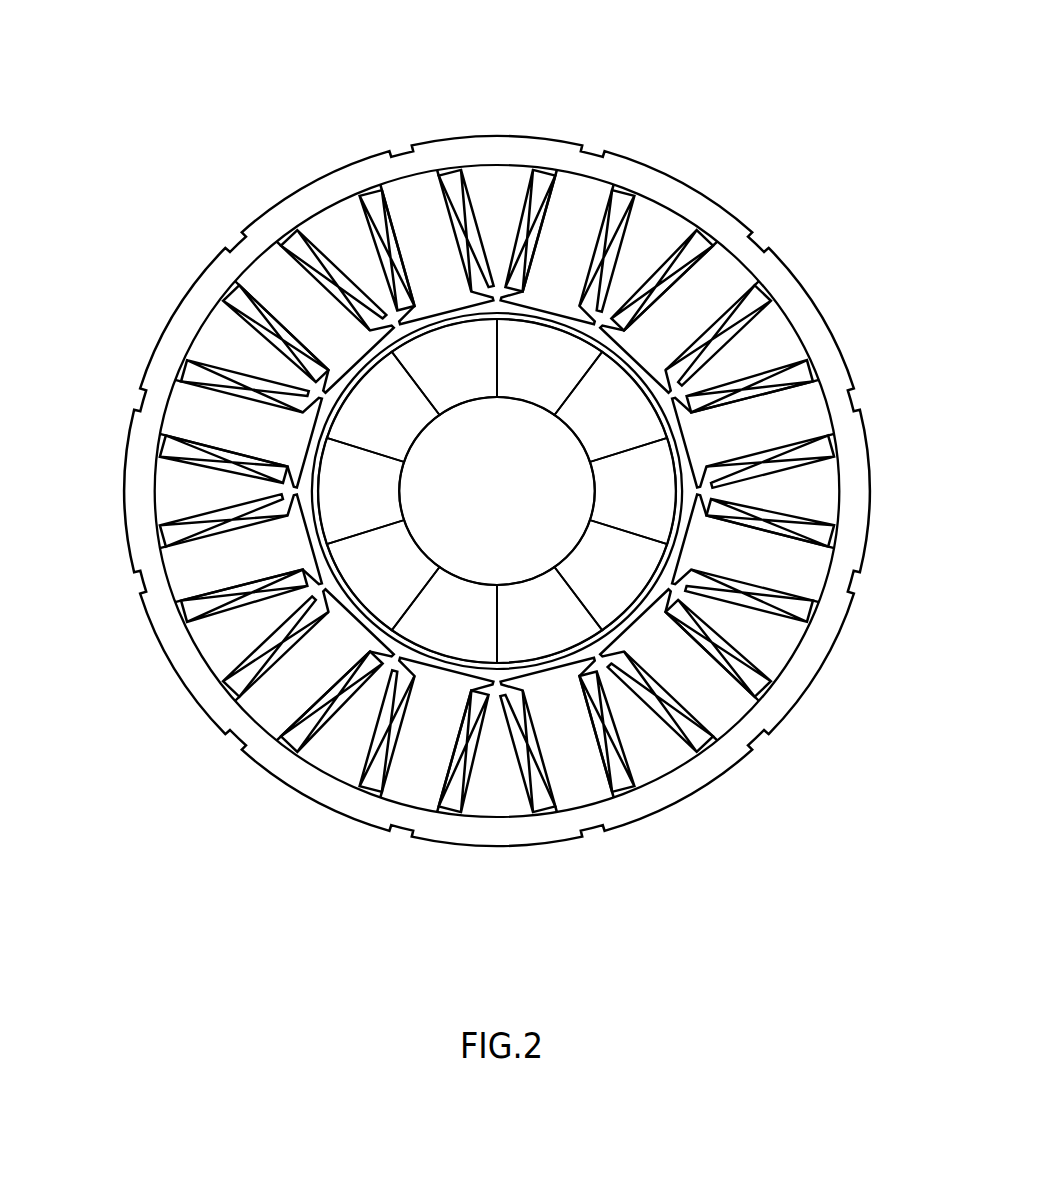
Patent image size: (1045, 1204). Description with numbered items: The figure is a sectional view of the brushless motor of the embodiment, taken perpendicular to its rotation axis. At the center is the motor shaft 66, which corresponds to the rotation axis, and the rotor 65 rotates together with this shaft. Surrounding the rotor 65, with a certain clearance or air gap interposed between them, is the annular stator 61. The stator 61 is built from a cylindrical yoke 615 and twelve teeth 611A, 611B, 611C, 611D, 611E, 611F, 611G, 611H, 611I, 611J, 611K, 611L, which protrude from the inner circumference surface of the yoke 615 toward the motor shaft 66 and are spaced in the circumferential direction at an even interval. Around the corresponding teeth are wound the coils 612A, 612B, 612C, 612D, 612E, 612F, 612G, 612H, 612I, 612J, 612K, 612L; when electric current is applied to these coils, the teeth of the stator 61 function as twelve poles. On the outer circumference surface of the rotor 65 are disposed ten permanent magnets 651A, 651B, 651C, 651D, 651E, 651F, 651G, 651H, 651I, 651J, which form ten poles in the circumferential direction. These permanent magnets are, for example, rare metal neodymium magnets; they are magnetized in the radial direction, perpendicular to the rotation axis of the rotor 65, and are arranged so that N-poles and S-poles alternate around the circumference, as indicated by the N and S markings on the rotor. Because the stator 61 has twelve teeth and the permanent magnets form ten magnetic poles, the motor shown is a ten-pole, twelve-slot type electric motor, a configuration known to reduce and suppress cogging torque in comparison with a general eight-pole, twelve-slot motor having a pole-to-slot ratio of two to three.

The stator 61 is at (527, 137).
The rotor 65 is at (455, 312).
The motor shaft 66 is at (507, 499).
The yoke 615 is at (463, 153).
The tooth 611A is at (590, 215).
The tooth 611B is at (713, 220).
The tooth 611C is at (792, 418).
The tooth 611D is at (787, 506).
The tooth 611E is at (747, 740).
The tooth 611F is at (582, 770).
The tooth 611G is at (400, 770).
The tooth 611H is at (246, 744).
The tooth 611I is at (147, 580).
The tooth 611J is at (200, 423).
The tooth 611K is at (287, 282).
The tooth 611L is at (405, 215).
The coil 612A is at (641, 195).
The coil 612B is at (708, 277).
The coil 612C is at (787, 467).
The coil 612D is at (790, 558).
The coil 612E is at (705, 700).
The coil 612F is at (618, 743).
The coil 612G is at (350, 740).
The coil 612H is at (287, 773).
The coil 612I is at (203, 513).
The coil 612J is at (207, 467).
The coil 612K is at (330, 263).
The coil 612L is at (363, 222).
The permanent magnet 651A is at (578, 333).
The permanent magnet 651B is at (700, 336).
The permanent magnet 651C is at (700, 432).
The permanent magnet 651D is at (790, 643).
The permanent magnet 651E is at (520, 650).
The permanent magnet 651F is at (480, 657).
The permanent magnet 651G is at (287, 702).
The permanent magnet 651H is at (395, 618).
The permanent magnet 651I is at (340, 402).
The permanent magnet 651J is at (395, 343).